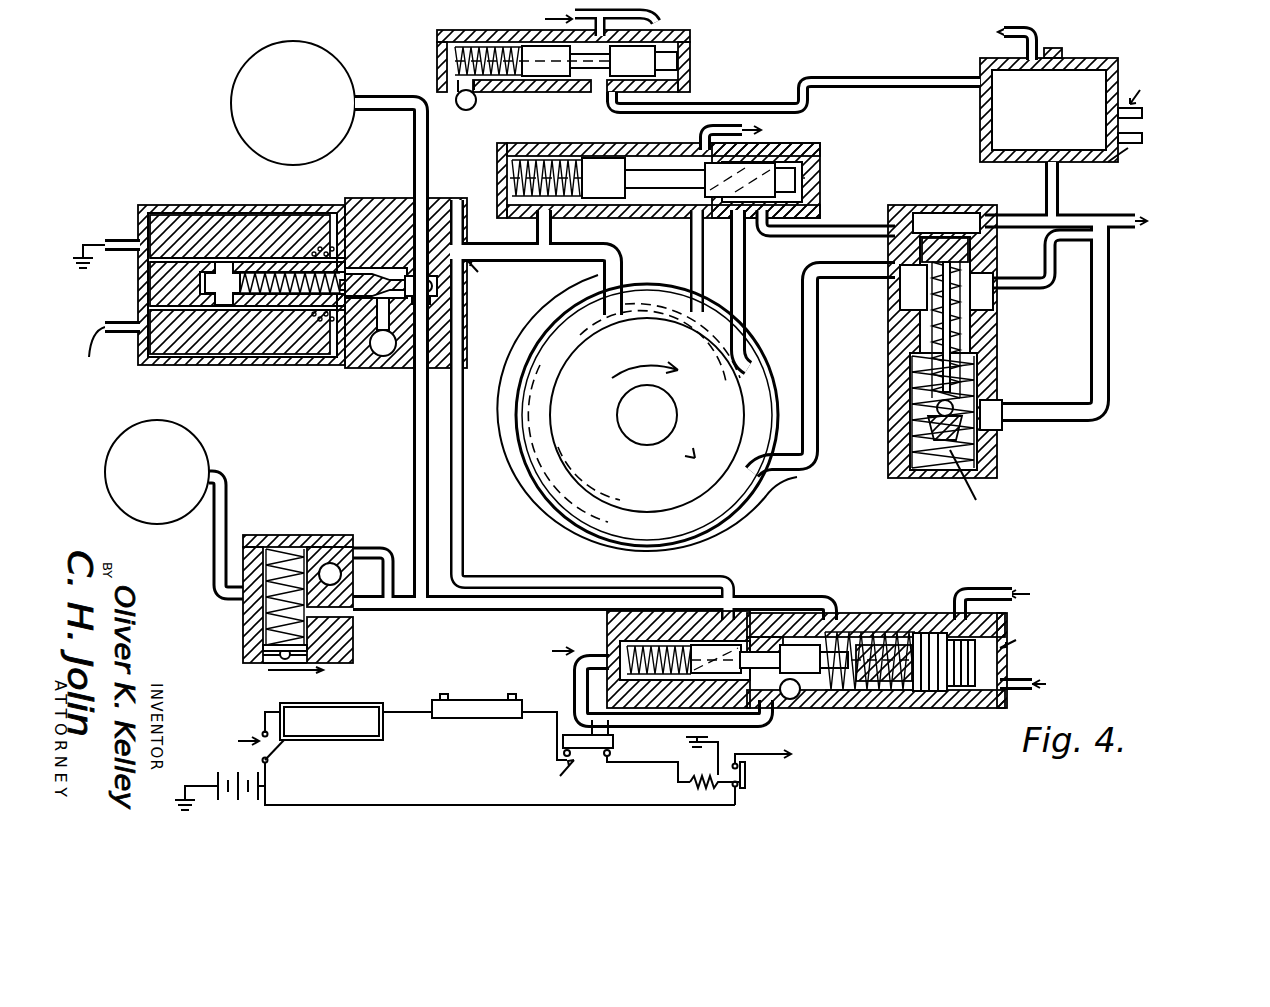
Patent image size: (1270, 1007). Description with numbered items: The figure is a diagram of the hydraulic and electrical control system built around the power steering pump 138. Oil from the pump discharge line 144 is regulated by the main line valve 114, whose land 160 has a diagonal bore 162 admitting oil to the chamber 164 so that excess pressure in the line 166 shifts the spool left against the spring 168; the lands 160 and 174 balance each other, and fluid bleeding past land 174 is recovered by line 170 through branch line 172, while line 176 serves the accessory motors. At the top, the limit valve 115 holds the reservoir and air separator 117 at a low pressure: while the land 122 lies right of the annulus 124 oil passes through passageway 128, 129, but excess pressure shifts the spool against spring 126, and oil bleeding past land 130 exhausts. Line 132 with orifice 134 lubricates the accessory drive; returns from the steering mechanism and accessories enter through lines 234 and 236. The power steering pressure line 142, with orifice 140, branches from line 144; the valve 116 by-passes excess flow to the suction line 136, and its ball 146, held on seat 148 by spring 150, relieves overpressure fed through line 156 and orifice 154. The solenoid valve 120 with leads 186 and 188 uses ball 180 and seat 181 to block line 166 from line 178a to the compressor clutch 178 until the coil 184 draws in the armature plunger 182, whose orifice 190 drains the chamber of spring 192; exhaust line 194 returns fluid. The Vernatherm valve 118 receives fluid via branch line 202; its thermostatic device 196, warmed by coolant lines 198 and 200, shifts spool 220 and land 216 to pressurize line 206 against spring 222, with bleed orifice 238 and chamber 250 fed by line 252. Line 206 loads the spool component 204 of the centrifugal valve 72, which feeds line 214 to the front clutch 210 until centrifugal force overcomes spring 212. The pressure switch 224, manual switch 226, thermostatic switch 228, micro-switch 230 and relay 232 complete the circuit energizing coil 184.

The valve 72 is at (332, 550).
The valve 114 is at (652, 168).
The valve 115 is at (566, 92).
The valve 116 is at (894, 320).
The reservoir and air separator 117 is at (1116, 82).
The valve 118 is at (849, 634).
The solenoid valve 120 is at (188, 198).
The land 122 is at (672, 62).
The annulus 124 is at (630, 92).
The spring 126 is at (438, 46).
The passageway 128 is at (658, 18).
The passageway 129 is at (902, 84).
The land 130 is at (526, 92).
The line 132 is at (1014, 30).
The orifice 134 is at (1054, 60).
The line 136 is at (1044, 290).
The power steering pump 138 is at (695, 458).
The orifice 140 is at (986, 244).
The power steering pressure line 142 is at (826, 240).
The pump discharge line 144 is at (742, 280).
The ball 146 is at (936, 410).
The seat 148 is at (940, 470).
The spring 150 is at (965, 300).
The orifice 154 is at (1002, 406).
The line 156 is at (1110, 350).
The land 160 is at (758, 236).
The diagonal bore 162 is at (780, 178).
The chamber 164 is at (812, 164).
The line 166 is at (466, 480).
The spring 168 is at (520, 168).
The line 170 is at (616, 270).
The branch line 172 is at (528, 236).
The land 174 is at (586, 168).
The line 176 is at (738, 128).
The compressor clutch 178 is at (250, 80).
The line 178a is at (414, 149).
The ball 180 is at (436, 286).
The ball seat 181 is at (424, 300).
The armature plunger 182 is at (213, 306).
The coil 184 is at (184, 365).
The lead 186 is at (124, 242).
The lead 188 is at (112, 332).
The orifice 190 is at (393, 250).
The spring 192 is at (230, 262).
The exhaust line 194 is at (385, 358).
The thermostatic device 196 is at (901, 638).
The line 198 is at (996, 596).
The line 200 is at (1018, 680).
The branch line 202 is at (522, 580).
The spool component 204 is at (262, 632).
The line 206 is at (362, 556).
The front clutch 210 is at (118, 440).
The spring 212 is at (284, 548).
The line 214 is at (229, 496).
The land 216 is at (686, 656).
The valve spool 220 is at (780, 712).
The spring 222 is at (610, 650).
The pressure switch 224 is at (615, 741).
The manual switch 226 is at (270, 756).
The thermostatically controlled switch 228 is at (320, 746).
The micro-switch 230 is at (492, 714).
The relay 232 is at (748, 781).
The line 234 is at (1126, 144).
The line 236 is at (1136, 114).
The orifice 238 is at (704, 676).
The chamber 250 is at (880, 690).
The line 252 is at (412, 446).